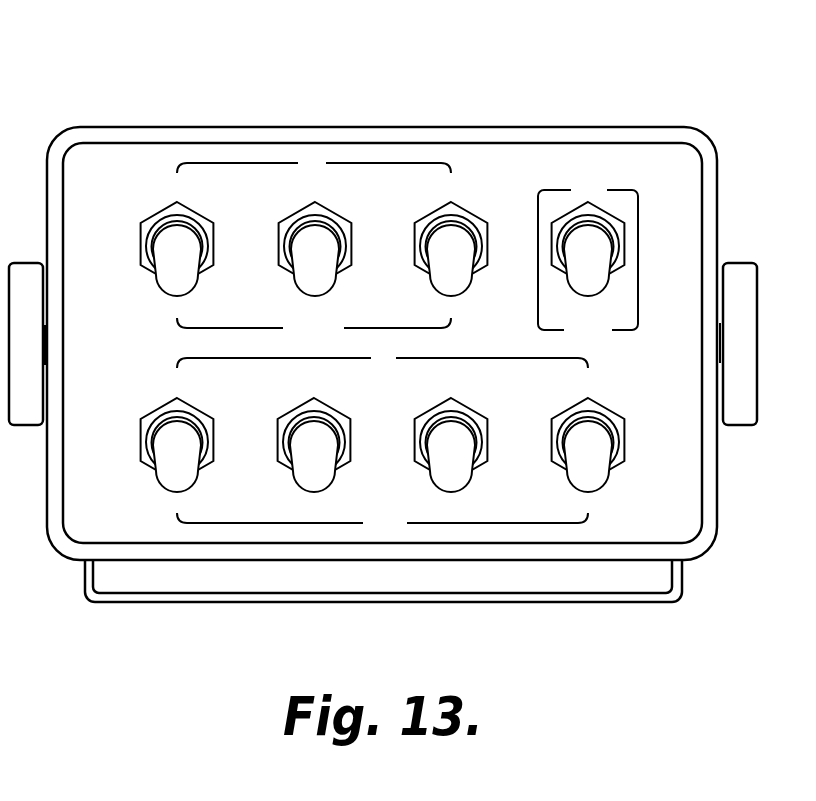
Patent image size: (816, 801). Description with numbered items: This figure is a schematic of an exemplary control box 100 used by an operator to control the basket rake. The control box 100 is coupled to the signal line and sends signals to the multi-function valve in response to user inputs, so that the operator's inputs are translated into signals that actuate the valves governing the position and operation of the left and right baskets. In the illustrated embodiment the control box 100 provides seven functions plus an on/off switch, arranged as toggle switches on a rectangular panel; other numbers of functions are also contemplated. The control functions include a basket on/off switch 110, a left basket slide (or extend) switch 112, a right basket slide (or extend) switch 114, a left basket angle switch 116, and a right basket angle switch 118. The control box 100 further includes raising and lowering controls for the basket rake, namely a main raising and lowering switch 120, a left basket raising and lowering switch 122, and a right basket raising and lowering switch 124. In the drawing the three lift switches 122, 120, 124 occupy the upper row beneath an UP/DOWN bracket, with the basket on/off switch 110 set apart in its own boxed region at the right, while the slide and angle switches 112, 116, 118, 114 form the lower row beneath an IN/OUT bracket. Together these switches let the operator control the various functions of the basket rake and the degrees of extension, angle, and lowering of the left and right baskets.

The control box 100 is at (391, 88).
The basket on/off switch 110 is at (610, 215).
The left basket slide switch 112 is at (141, 466).
The right basket slide switch 114 is at (623, 462).
The left basket angle switch 116 is at (279, 466).
The right basket angle switch 118 is at (486, 462).
The main raising and lowering switch 120 is at (290, 212).
The left basket raising and lowering switch 122 is at (147, 217).
The right basket raising and lowering switch 124 is at (483, 215).